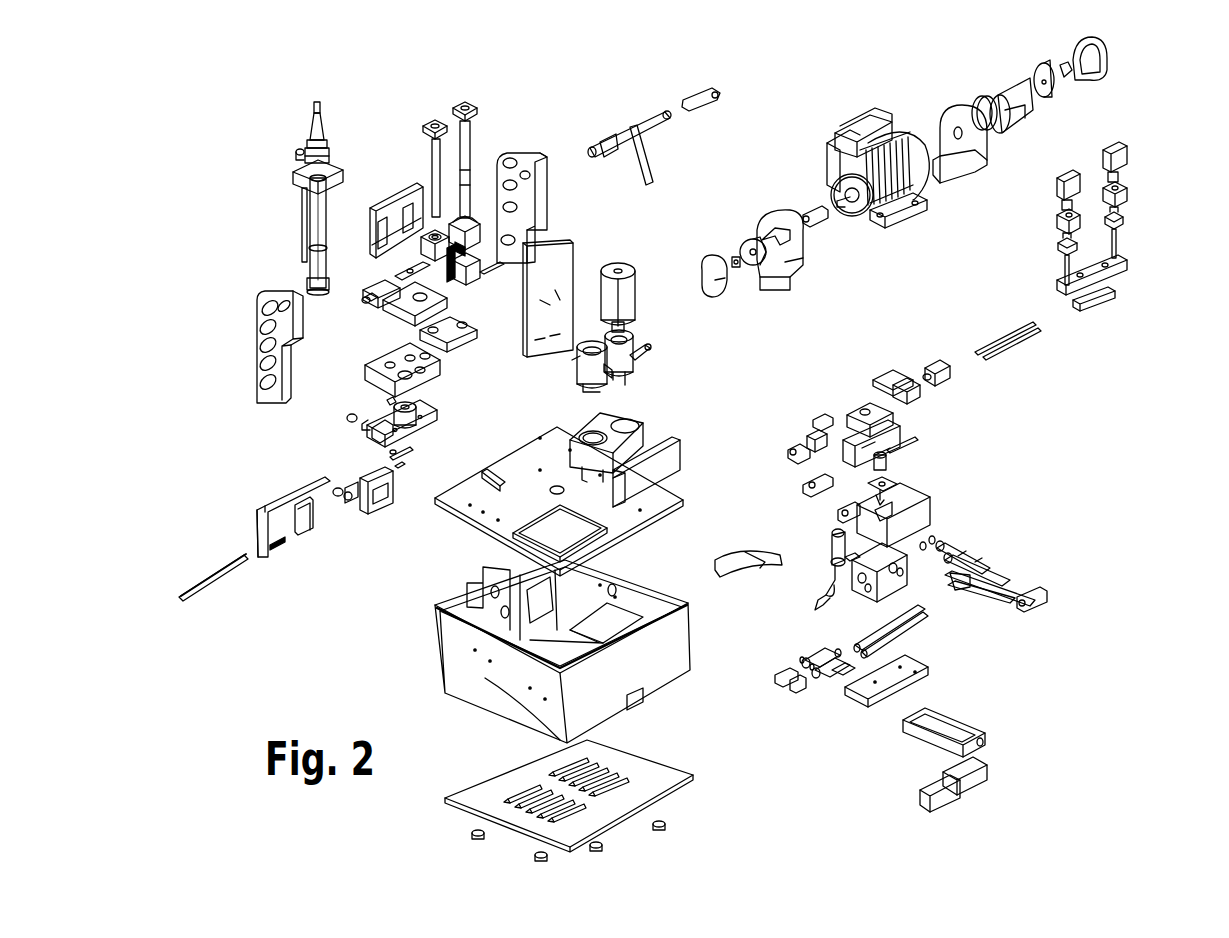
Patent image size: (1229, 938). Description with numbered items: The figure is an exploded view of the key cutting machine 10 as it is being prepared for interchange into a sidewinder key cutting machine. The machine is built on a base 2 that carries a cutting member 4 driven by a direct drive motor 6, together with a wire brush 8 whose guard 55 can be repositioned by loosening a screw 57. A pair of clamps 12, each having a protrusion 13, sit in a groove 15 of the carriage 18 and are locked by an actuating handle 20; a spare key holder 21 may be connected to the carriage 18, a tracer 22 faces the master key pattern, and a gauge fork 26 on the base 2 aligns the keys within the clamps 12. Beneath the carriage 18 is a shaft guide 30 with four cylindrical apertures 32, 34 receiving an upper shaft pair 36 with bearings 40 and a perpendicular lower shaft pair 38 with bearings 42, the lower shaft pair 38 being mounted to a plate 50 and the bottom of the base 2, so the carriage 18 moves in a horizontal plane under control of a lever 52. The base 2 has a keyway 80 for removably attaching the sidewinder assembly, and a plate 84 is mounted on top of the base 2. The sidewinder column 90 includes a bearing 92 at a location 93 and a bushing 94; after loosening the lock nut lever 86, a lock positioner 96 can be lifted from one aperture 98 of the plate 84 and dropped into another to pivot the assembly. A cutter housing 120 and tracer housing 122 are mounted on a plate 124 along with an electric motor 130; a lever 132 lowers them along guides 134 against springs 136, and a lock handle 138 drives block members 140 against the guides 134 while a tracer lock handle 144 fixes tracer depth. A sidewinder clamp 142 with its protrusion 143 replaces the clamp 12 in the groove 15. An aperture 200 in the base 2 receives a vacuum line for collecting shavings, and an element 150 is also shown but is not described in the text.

The base 2 is at (528, 465).
The cutting member 4 is at (768, 267).
The motor 6 is at (890, 216).
The wire brush 8 is at (1048, 97).
The key cutting machine 10 is at (268, 86).
The clamp 12 is at (1135, 210).
The protrusion 13 is at (1105, 300).
The groove 15 is at (855, 497).
The carriage 18 is at (905, 510).
The actuating handle 20 is at (900, 440).
The spare key holder 21 is at (718, 560).
The tracer 22 is at (393, 464).
The gauge fork 26 is at (262, 512).
The shaft guide 30 is at (900, 585).
The cylindrical aperture 32 is at (905, 562).
The cylindrical aperture 34 is at (866, 592).
The upper shaft pair 36 is at (1000, 580).
The lower shaft pair 38 is at (895, 630).
The bearing 40 is at (965, 552).
The bearing 42 is at (835, 668).
The plate 50 is at (893, 675).
The lever 52 is at (830, 562).
The guard 55 is at (1008, 86).
The screw 57 is at (988, 93).
The keyway 80 is at (487, 474).
The plate 84 is at (427, 435).
The lock nut lever 86 is at (322, 124).
The column 90 is at (325, 212).
The bearing 92 is at (395, 412).
The bearing location 93 is at (311, 274).
The bushing 94 is at (304, 250).
The lock positioner 96 is at (301, 150).
The aperture 98 is at (425, 418).
The cutter housing 120 is at (634, 340).
The tracer housing 122 is at (605, 383).
The plate 124 is at (572, 295).
The electric motor 130 is at (632, 280).
The lever 132 is at (652, 92).
The guides 134 is at (470, 135).
The springs 136 is at (500, 290).
The lock handle 138 is at (370, 303).
The block members 140 is at (376, 300).
The sidewinder clamp 142 is at (838, 413).
The protrusion 143 is at (848, 463).
The tracer lock handle 144 is at (637, 357).
The bracket 150 is at (680, 460).
The aperture 200 is at (564, 493).